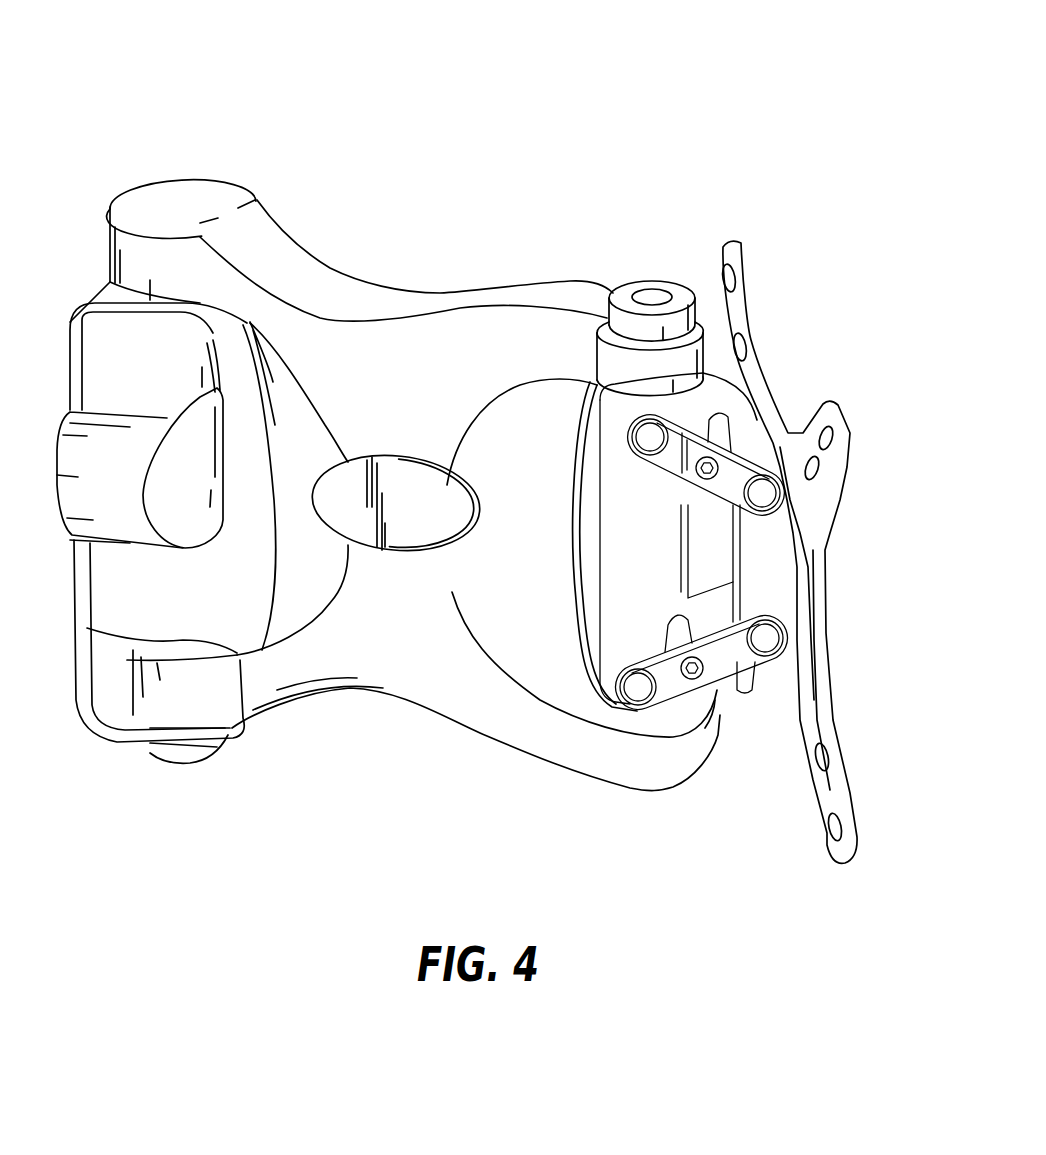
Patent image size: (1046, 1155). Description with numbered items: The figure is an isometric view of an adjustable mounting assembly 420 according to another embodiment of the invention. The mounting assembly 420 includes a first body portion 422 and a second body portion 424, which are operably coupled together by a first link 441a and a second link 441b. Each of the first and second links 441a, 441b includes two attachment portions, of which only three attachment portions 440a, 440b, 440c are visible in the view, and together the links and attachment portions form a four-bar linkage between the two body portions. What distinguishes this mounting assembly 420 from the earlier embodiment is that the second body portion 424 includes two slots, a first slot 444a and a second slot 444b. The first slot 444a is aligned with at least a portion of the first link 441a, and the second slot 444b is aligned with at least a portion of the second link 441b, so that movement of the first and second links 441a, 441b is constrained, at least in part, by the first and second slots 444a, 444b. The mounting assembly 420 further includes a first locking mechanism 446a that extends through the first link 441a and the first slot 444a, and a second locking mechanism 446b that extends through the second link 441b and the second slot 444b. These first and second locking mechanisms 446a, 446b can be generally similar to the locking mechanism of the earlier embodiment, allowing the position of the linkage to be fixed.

The adjustable mounting assembly 420 is at (772, 83).
The first body portion 422 is at (757, 580).
The second body portion 424 is at (620, 630).
The attachment portion 440a is at (672, 460).
The attachment portion 440b is at (740, 663).
The attachment portion 440c is at (722, 585).
The first link 441a is at (748, 456).
The second link 441b is at (671, 712).
The first slot 444a is at (710, 465).
The second slot 444b is at (681, 615).
The first locking mechanism 446a is at (745, 452).
The second locking mechanism 446b is at (702, 672).